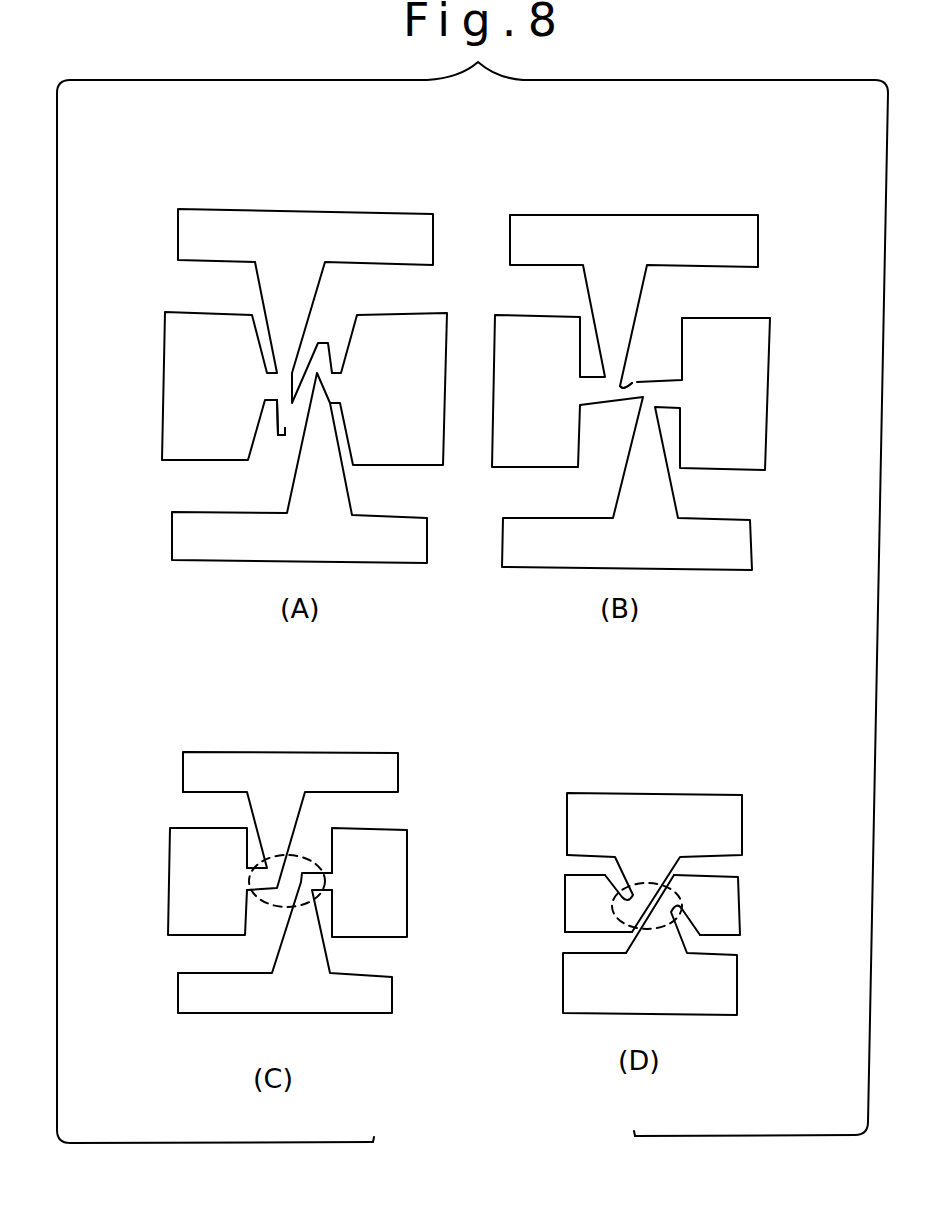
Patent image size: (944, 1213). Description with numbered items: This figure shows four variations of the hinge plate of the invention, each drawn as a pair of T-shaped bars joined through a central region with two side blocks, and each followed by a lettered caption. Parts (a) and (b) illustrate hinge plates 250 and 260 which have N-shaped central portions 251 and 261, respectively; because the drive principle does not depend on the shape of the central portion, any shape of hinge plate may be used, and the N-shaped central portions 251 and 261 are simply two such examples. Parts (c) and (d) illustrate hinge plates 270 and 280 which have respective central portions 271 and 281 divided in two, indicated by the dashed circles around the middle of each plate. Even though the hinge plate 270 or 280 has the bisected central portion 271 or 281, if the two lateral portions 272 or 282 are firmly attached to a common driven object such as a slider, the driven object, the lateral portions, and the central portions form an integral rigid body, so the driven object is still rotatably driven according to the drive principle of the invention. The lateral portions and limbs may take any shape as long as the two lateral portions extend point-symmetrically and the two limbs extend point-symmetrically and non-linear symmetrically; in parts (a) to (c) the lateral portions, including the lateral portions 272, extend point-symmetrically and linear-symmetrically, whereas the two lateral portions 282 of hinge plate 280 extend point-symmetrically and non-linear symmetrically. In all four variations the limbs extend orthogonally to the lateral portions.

The hinge plate 250 is at (257, 170).
The N-shaped central portion 251 is at (285, 436).
The hinge plate 260 is at (652, 178).
The N-shaped central portion 261 is at (631, 387).
The hinge plate 270 is at (142, 770).
The central portion 271 is at (273, 907).
The lateral portions 272 is at (180, 892).
The hinge plate 280 is at (737, 763).
The central portion 281 is at (616, 912).
The lateral portions 282 is at (567, 898).